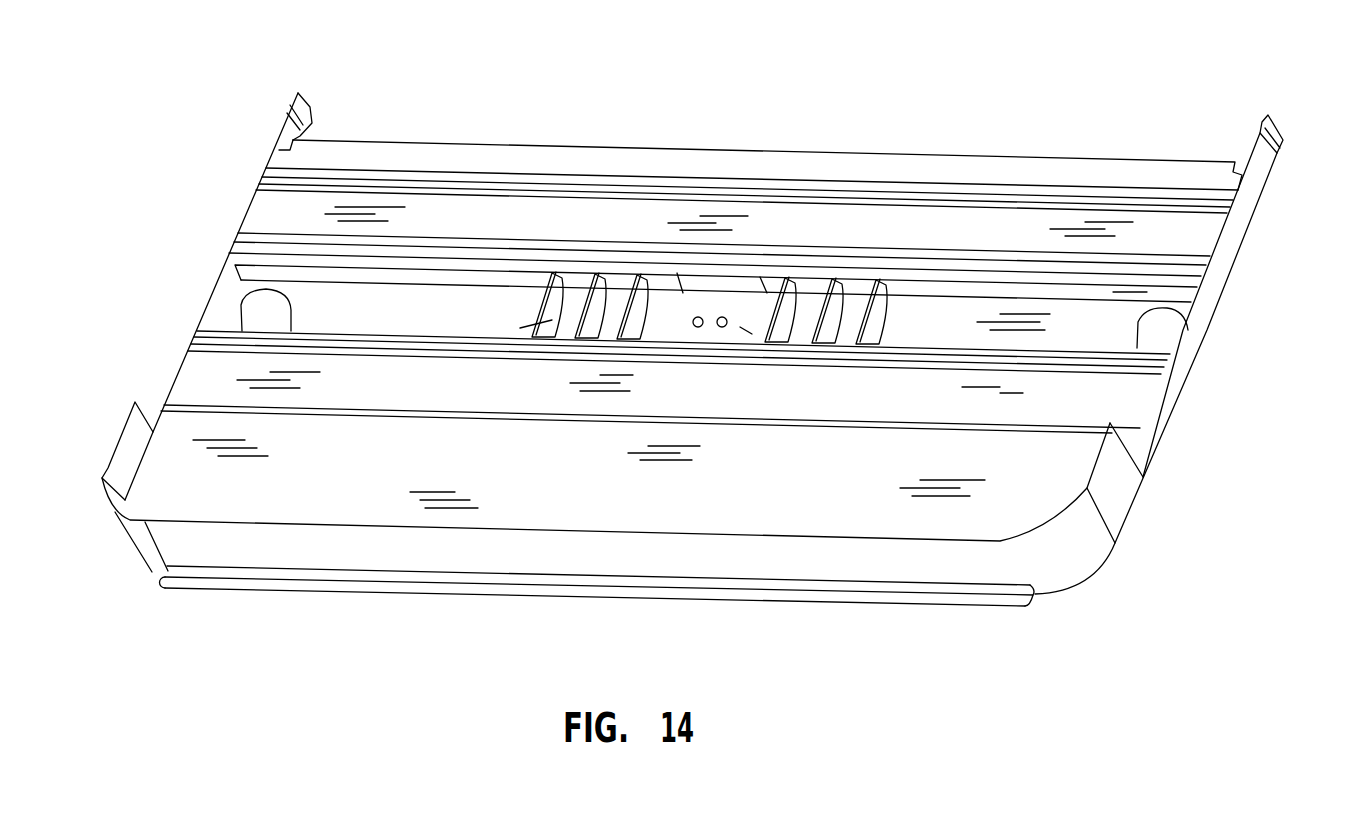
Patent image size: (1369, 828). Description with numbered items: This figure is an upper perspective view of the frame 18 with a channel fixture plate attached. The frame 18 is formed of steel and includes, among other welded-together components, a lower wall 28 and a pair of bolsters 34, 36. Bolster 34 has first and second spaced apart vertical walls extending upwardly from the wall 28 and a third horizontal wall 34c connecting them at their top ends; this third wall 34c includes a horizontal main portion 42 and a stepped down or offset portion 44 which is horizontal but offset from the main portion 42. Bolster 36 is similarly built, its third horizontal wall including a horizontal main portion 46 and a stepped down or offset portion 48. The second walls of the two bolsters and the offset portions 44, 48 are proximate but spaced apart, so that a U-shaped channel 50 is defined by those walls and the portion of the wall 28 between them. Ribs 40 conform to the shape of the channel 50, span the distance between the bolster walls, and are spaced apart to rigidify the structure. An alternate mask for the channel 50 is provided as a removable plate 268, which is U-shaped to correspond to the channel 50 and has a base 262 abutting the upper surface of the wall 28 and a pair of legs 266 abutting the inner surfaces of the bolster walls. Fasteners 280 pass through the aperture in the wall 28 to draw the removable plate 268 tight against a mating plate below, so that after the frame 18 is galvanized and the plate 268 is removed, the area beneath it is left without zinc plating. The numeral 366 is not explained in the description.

The frame 18 is at (978, 128).
The bolster 36 is at (1046, 213).
The main portion 46 is at (1113, 227).
The stepped down or offset portion 48 is at (1120, 267).
The rib 366 is at (1117, 290).
The lower wall 28 is at (1097, 327).
The stepped down or offset portion 44 is at (1143, 360).
The main portion 42 is at (1130, 393).
The third horizontal wall 34c is at (1065, 402).
The bolster 34 is at (986, 408).
The U-shaped channel 50 is at (471, 305).
The ribs 40 is at (576, 321).
The removable plate 268 is at (770, 302).
The base 262 is at (747, 330).
The legs 266 is at (767, 275).
The fasteners 280 is at (722, 328).